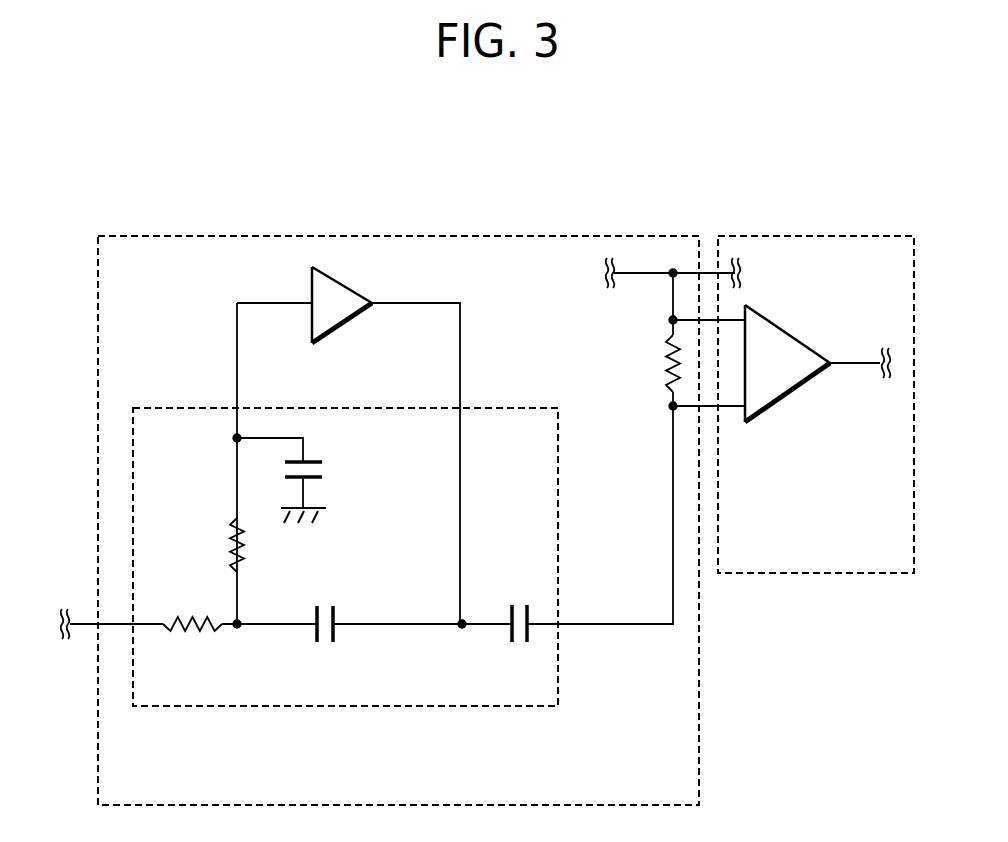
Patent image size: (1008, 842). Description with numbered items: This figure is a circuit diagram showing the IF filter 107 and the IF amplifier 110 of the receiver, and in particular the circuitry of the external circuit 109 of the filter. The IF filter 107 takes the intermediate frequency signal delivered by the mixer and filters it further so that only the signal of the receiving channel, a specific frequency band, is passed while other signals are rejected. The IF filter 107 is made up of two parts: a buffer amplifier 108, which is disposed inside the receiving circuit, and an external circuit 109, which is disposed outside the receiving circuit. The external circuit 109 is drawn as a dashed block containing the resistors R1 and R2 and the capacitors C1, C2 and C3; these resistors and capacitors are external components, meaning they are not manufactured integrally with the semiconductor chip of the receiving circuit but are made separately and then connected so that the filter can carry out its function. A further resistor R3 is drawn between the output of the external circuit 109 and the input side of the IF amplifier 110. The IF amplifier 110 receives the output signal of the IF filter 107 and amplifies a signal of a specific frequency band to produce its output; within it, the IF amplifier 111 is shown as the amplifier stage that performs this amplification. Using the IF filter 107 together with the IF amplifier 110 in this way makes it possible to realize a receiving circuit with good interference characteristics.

The IF filter 107 is at (320, 235).
The buffer amplifier 108 is at (356, 294).
The external circuit 109 is at (346, 708).
The IF amplifier 110 is at (820, 233).
The IF amplifier 111 is at (794, 333).
The resistor R1 is at (192, 644).
The resistor R2 is at (218, 545).
The resistor R3 is at (675, 334).
The capacitor C1 is at (298, 480).
The capacitor C2 is at (324, 643).
The capacitor C3 is at (520, 642).